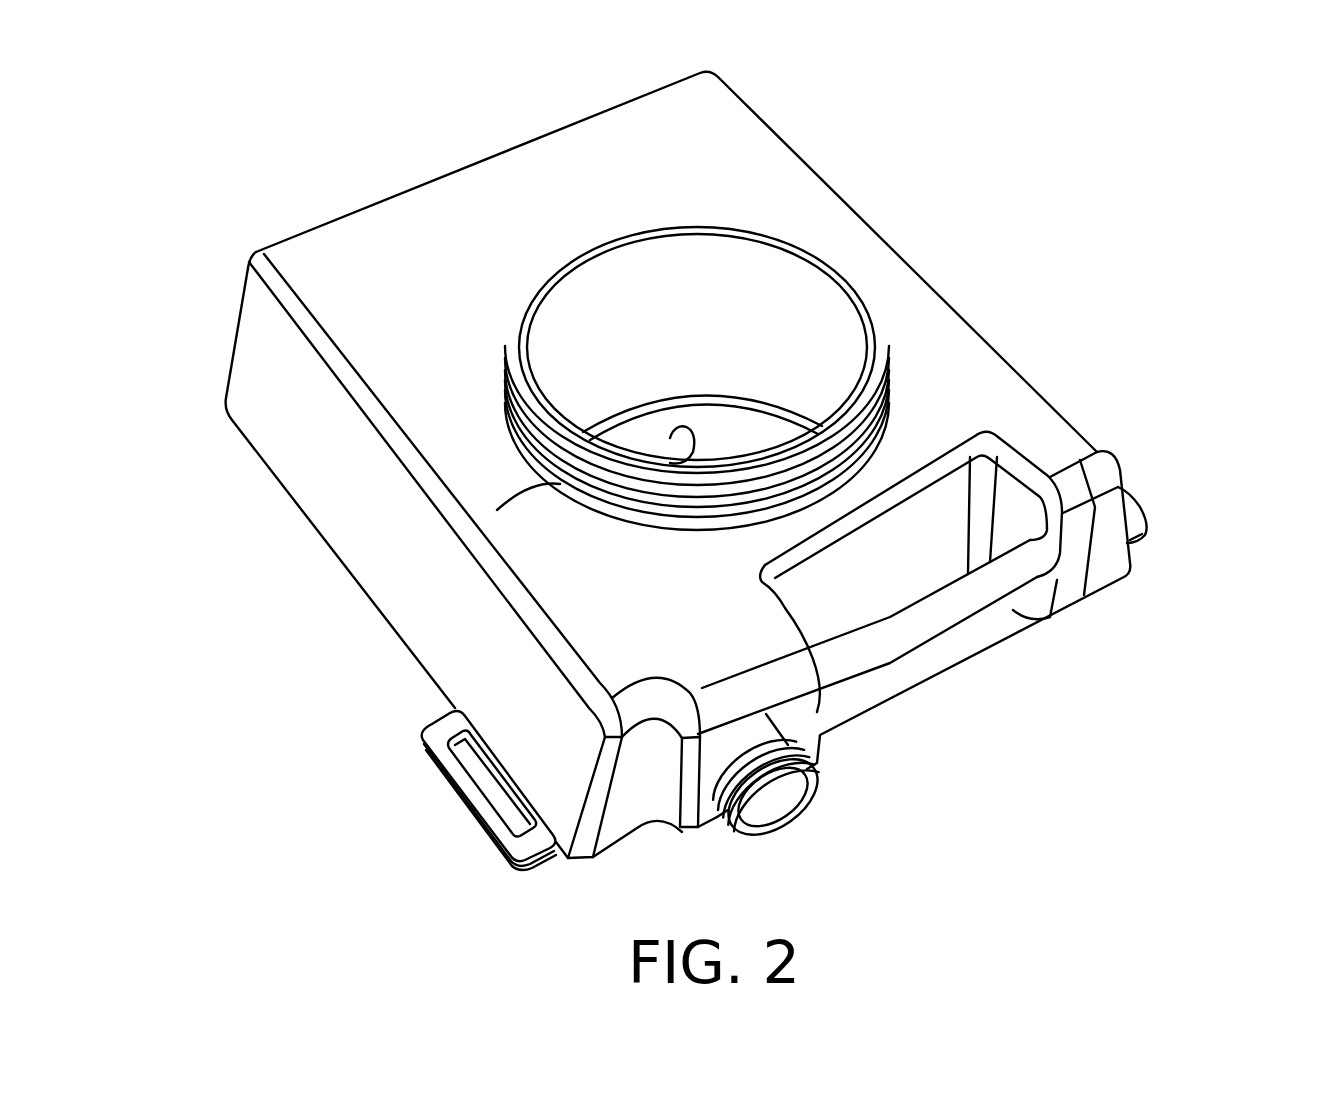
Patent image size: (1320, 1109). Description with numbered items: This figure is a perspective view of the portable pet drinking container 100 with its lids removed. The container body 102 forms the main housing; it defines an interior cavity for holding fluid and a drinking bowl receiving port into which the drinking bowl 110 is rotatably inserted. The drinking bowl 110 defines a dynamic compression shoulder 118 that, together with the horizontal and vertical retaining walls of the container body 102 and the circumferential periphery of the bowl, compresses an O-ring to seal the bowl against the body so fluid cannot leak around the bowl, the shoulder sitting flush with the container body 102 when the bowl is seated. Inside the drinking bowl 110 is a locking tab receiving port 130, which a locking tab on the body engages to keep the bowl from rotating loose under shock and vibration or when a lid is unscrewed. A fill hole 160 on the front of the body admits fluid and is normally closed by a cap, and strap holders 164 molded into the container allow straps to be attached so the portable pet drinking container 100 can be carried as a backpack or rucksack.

The portable pet drinking container 100 is at (212, 145).
The container body 102 is at (987, 370).
The drinking bowl 110 is at (853, 288).
The dynamic compression shoulder 118 is at (553, 483).
The locking tab receiving port 130 is at (686, 448).
The fill hole 160 is at (783, 790).
The strap holders 164 is at (483, 837).